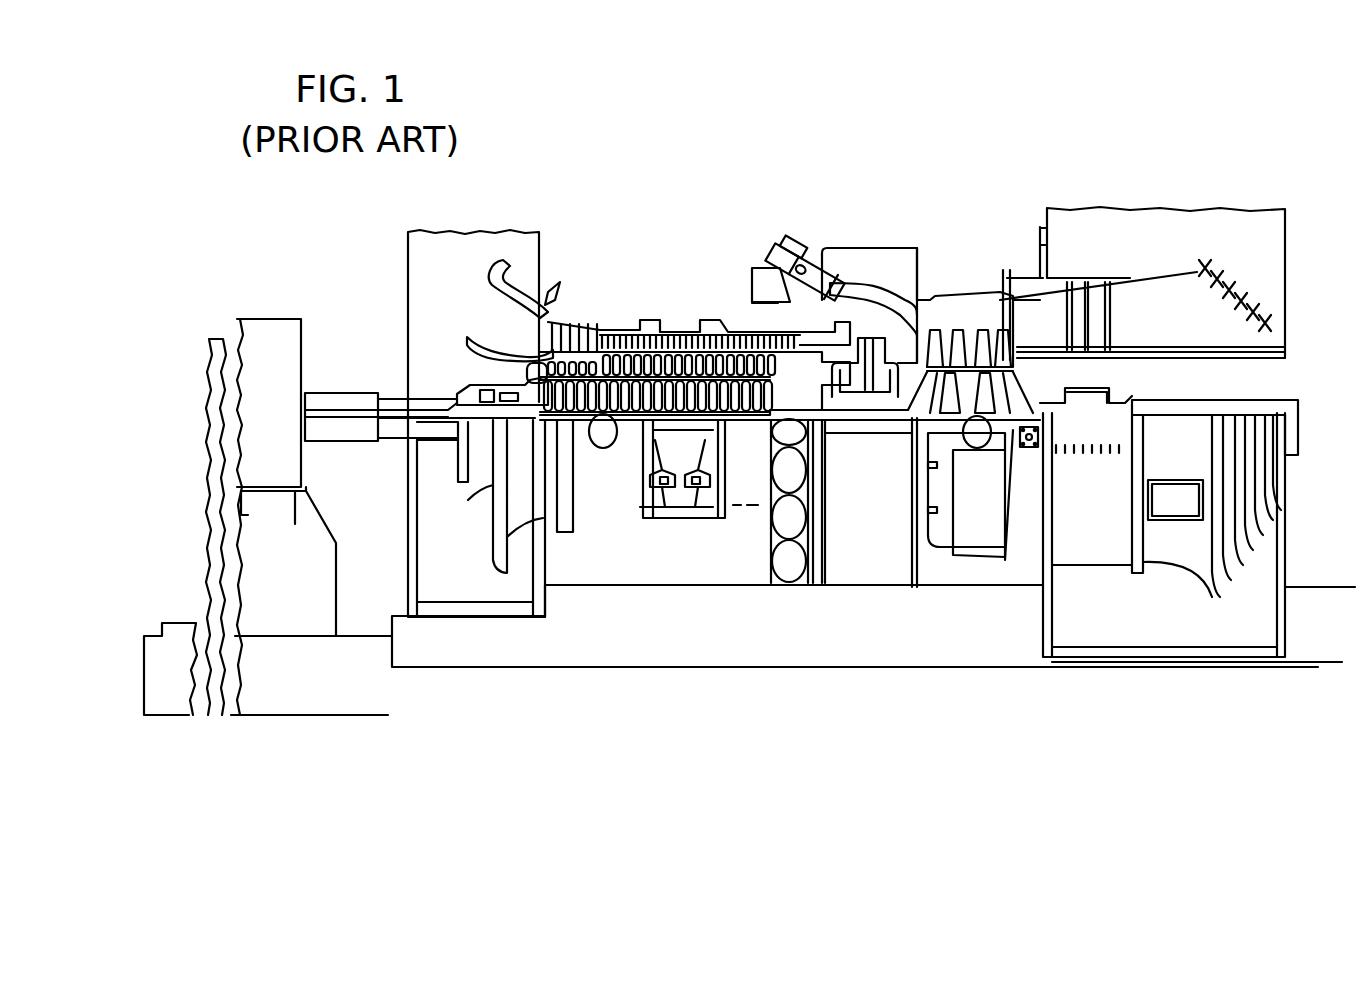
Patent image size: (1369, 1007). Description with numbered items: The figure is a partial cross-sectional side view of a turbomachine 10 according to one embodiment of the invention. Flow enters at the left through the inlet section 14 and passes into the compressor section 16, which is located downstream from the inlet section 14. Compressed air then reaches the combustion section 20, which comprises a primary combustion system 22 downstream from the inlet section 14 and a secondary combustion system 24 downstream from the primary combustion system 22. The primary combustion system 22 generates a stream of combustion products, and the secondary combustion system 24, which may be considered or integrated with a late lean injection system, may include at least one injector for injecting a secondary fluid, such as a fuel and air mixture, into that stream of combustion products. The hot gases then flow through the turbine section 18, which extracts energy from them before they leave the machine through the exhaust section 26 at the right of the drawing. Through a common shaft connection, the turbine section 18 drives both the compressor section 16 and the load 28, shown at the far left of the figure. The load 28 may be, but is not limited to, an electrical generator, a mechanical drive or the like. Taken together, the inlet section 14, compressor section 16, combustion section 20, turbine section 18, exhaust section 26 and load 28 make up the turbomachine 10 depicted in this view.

The turbomachine 10 is at (653, 688).
The inlet section 14 is at (472, 231).
The compressor section 16 is at (680, 330).
The turbine section 18 is at (970, 287).
The combustion section 20 is at (841, 238).
The primary combustion system 22 is at (817, 232).
The secondary combustion system 24 is at (865, 262).
The exhaust section 26 is at (1165, 275).
The load 28 is at (267, 340).